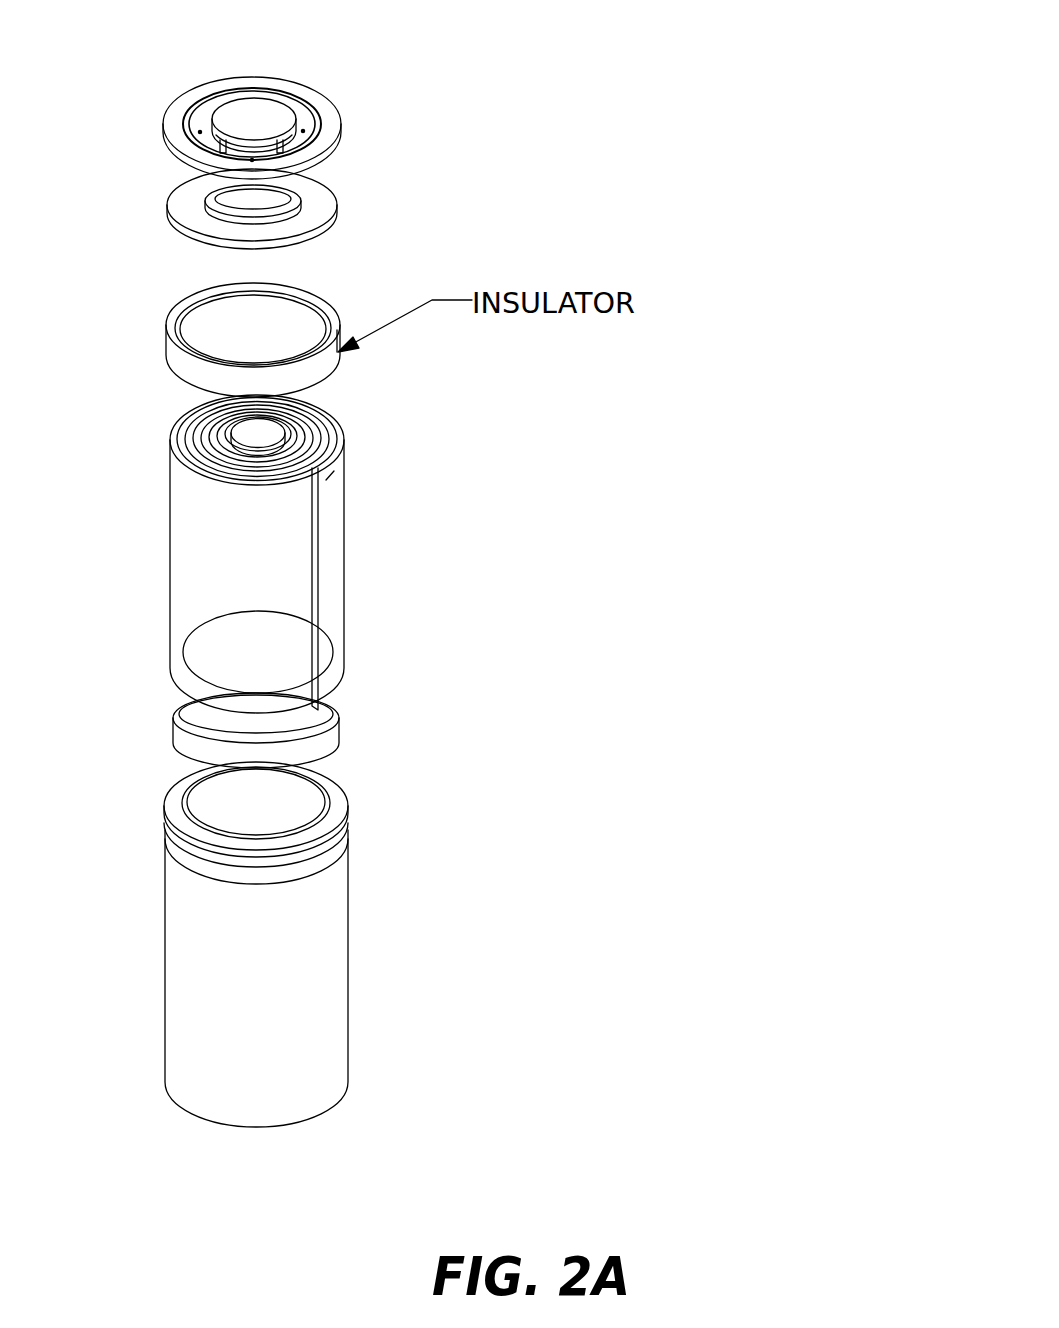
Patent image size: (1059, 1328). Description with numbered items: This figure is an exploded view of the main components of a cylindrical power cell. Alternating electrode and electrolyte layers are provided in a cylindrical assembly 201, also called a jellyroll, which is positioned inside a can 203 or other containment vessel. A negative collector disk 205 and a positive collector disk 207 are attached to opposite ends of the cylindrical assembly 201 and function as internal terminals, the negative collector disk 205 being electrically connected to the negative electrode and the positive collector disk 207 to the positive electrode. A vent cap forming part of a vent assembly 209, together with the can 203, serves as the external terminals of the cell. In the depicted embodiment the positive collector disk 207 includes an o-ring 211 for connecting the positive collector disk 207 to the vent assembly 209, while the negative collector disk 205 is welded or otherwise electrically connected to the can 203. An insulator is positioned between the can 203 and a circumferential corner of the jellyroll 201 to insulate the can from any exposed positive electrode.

The vent assembly 209 is at (196, 115).
The o-ring 211 is at (238, 205).
The positive collector disk 207 is at (282, 233).
The cylindrical assembly 201 is at (280, 534).
The negative collector disk 205 is at (293, 733).
The can 203 is at (273, 943).